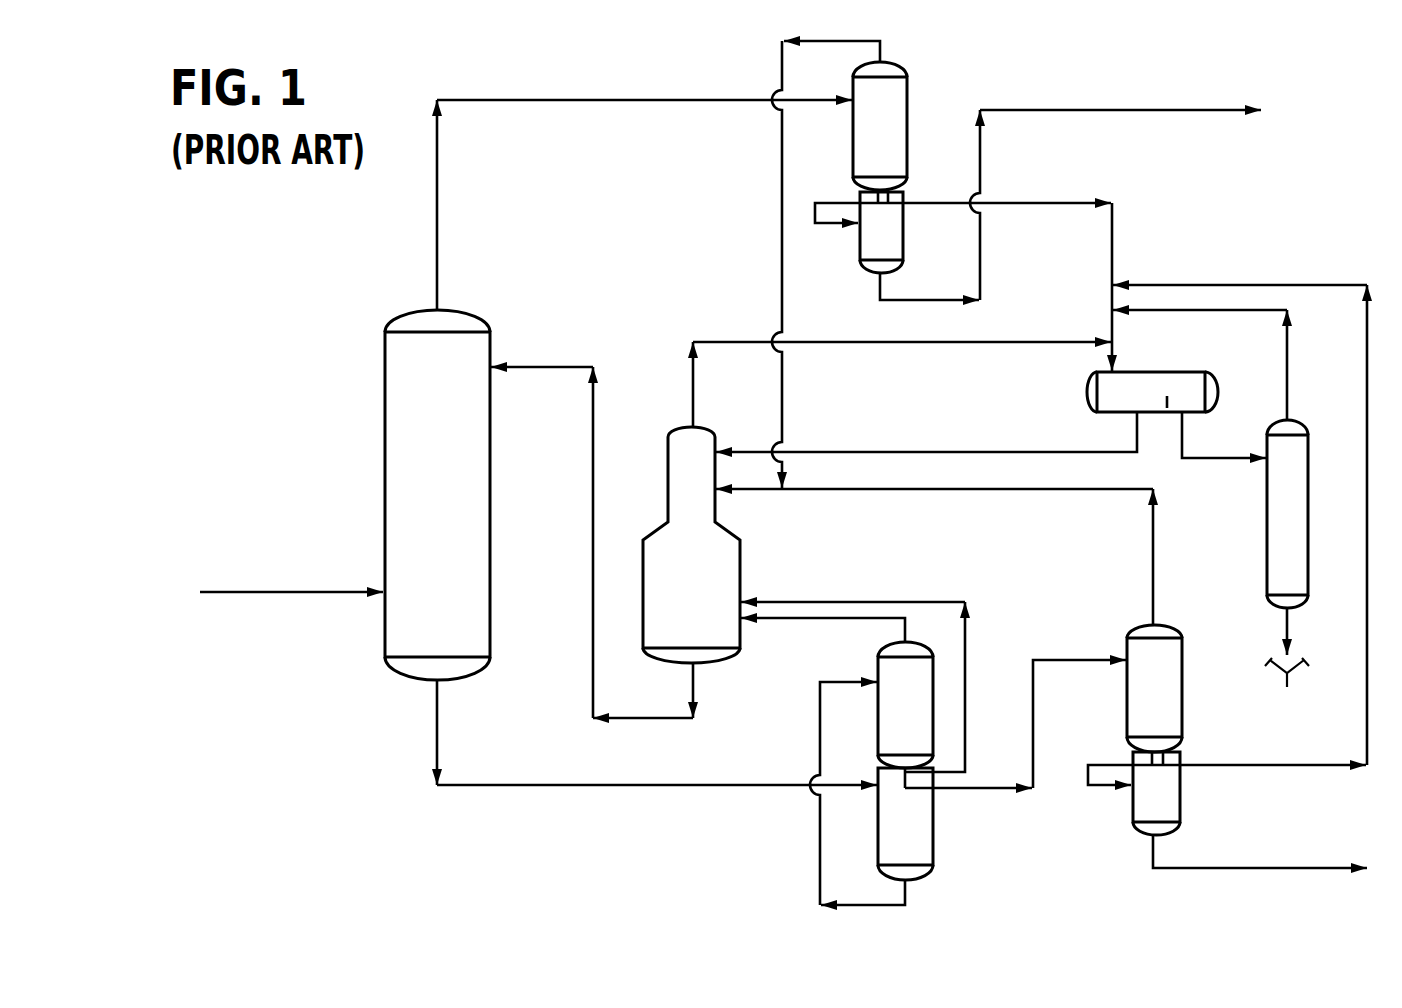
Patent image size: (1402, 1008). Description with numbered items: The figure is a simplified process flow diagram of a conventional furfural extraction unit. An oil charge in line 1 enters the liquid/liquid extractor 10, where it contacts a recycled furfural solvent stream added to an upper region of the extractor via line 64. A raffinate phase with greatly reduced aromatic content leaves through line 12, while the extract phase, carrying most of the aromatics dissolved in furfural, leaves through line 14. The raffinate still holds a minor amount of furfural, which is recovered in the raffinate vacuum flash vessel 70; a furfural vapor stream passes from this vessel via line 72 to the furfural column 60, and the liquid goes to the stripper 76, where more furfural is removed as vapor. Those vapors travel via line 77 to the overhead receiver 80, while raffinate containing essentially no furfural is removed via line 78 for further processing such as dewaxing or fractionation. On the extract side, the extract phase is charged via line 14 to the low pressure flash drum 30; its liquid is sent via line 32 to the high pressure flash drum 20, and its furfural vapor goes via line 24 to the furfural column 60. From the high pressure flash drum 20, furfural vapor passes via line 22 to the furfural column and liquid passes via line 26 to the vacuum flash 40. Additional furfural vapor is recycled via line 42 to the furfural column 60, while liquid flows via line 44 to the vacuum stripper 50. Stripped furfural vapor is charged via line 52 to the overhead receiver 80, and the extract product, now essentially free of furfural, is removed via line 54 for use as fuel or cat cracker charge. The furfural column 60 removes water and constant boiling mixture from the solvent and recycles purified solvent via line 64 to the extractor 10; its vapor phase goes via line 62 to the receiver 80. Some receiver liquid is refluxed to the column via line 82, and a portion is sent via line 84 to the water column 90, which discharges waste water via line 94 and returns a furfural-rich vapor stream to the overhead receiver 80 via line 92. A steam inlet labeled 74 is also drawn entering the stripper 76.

The oil charge line 1 is at (240, 592).
The liquid/liquid extractor 10 is at (492, 441).
The raffinate line 12 is at (437, 222).
The extract line 14 is at (437, 738).
The high pressure flash drum 20 is at (878, 742).
The furfural vapor line 22 is at (893, 632).
The furfural vapor line 24 is at (967, 648).
The liquid phase line 26 is at (975, 786).
The low pressure flash drum 30 is at (878, 845).
The liquid phase line 32 is at (910, 896).
The vacuum flash 40 is at (1127, 718).
The furfural vapor line 42 is at (1157, 566).
The liquid phase line 44 is at (1087, 775).
The vacuum stripper 50 is at (1180, 785).
The furfural vapor line 52 is at (1207, 765).
The extract product line 54 is at (1172, 868).
The furfural column 60 is at (742, 568).
The vapor phase line 62 is at (718, 342).
The recycled solvent line 64 is at (540, 367).
The raffinate vacuum flash vessel 70 is at (910, 107).
The furfural vapor line 72 is at (782, 226).
The raffinate stripper steam line 74 is at (840, 203).
The stripper 76 is at (905, 240).
The furfural vapor line 77 is at (923, 203).
The raffinate line 78 is at (907, 298).
The overhead receiver 80 is at (1180, 372).
The reflux line 82 is at (1007, 452).
The water column feed line 84 is at (1190, 449).
The water column 90 is at (1310, 500).
The furfural vapor recycle line 92 is at (1288, 380).
The waste water line 94 is at (1290, 621).